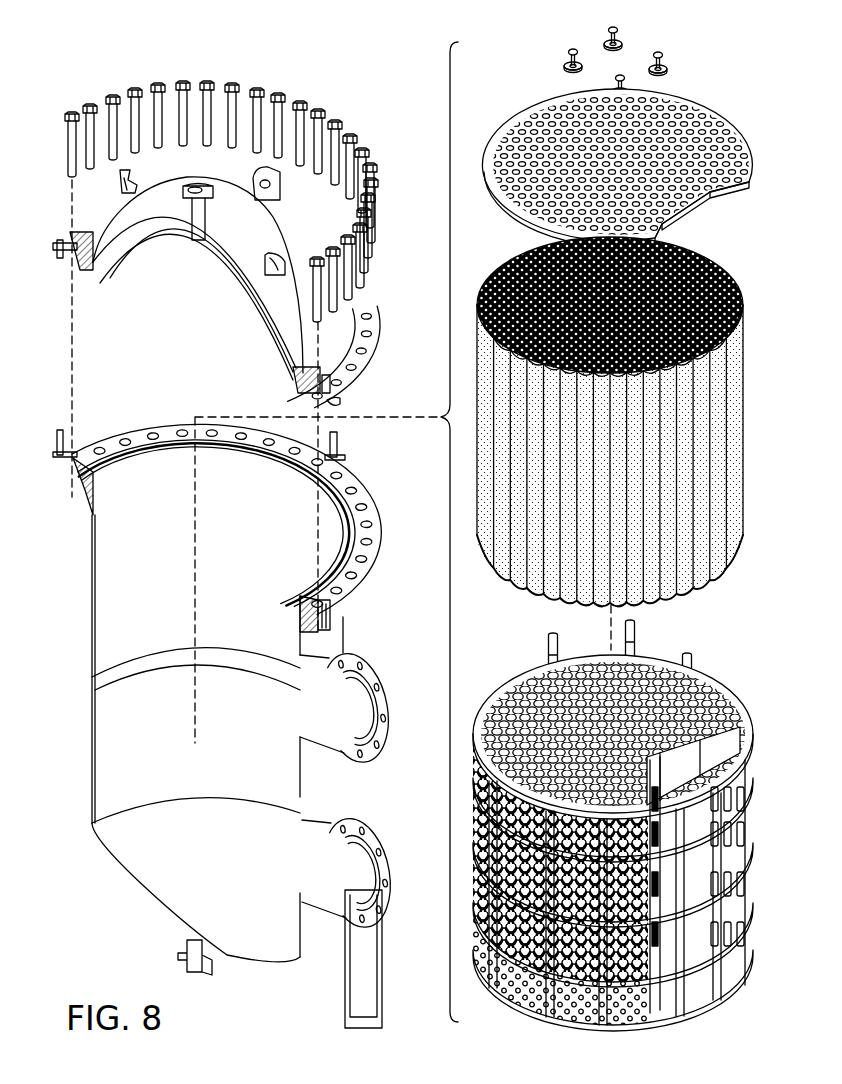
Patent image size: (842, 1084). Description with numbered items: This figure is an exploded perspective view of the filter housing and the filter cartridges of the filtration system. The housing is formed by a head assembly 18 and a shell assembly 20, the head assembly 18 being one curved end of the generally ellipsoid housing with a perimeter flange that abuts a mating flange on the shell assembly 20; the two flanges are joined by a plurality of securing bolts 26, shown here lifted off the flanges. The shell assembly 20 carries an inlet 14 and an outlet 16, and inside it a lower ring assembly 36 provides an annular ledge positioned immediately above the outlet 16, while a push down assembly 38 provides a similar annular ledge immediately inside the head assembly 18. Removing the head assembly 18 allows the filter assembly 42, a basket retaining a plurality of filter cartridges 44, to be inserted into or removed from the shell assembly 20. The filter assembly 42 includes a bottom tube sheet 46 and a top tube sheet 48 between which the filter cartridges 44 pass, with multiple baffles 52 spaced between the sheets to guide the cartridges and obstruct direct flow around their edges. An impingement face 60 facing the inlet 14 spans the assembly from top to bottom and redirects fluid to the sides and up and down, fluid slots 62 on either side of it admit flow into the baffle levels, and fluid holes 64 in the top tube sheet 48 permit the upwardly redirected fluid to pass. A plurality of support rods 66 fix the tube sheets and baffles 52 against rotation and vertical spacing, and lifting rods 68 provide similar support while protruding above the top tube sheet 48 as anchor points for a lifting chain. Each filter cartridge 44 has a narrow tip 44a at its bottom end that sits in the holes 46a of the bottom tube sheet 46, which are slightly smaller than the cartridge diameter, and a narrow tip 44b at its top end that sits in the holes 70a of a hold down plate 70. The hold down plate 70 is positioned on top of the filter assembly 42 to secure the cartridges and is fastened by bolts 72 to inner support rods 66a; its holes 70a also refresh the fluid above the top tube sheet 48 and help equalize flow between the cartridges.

The inlet 14 is at (385, 669).
The outlet 16 is at (385, 832).
The head assembly 18 is at (204, 287).
The shell assembly 20 is at (236, 726).
The securing bolts 26 is at (108, 93).
The lower ring assembly 36 is at (123, 668).
The push down assembly 38 is at (120, 245).
The filter assembly 42 is at (635, 836).
The filter cartridges 44 is at (639, 421).
The narrow tip 44a is at (732, 556).
The narrow tip 44b is at (737, 276).
The bottom tube sheet 46 is at (525, 1012).
The holes 46a is at (577, 1007).
The top tube sheet 48 is at (493, 702).
The baffles 52 is at (475, 895).
The impingement face 60 is at (693, 898).
The fluid slots 62 is at (737, 838).
The fluid holes 64 is at (747, 753).
The support rods 66 is at (607, 1002).
The inner support rods 66a is at (670, 660).
The lifting rods 68 is at (693, 650).
The hold down plate 70 is at (629, 155).
The holes 70a is at (737, 127).
The bolts 72 is at (617, 33).